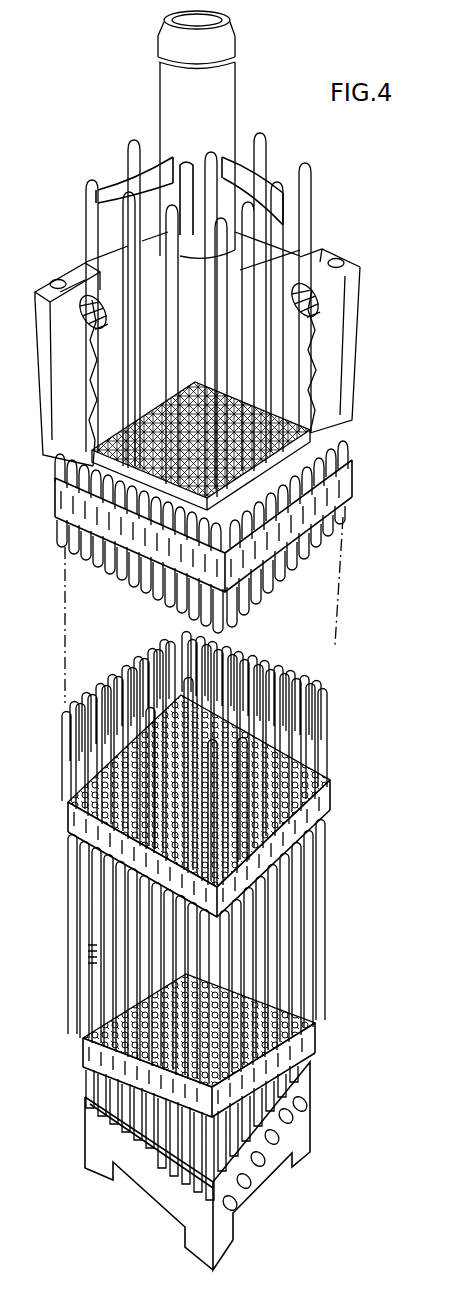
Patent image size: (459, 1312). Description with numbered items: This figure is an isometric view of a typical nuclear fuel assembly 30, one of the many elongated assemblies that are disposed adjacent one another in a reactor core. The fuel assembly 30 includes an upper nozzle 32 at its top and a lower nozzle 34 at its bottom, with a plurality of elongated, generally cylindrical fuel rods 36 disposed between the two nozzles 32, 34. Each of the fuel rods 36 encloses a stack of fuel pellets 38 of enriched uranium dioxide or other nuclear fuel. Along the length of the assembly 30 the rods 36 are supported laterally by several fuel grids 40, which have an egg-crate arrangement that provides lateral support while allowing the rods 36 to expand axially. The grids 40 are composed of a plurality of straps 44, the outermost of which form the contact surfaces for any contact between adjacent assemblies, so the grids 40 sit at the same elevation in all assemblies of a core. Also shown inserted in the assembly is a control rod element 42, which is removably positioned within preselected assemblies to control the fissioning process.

The fuel assembly 30 is at (396, 641).
The upper nozzle 32 is at (356, 326).
The lower nozzle 34 is at (300, 1136).
The fuel rods 36 is at (349, 510).
The fuel pellets 38 is at (92, 970).
The fuel grids 40 is at (68, 820).
The control rod element 42 is at (276, 172).
The straps 44 is at (272, 802).